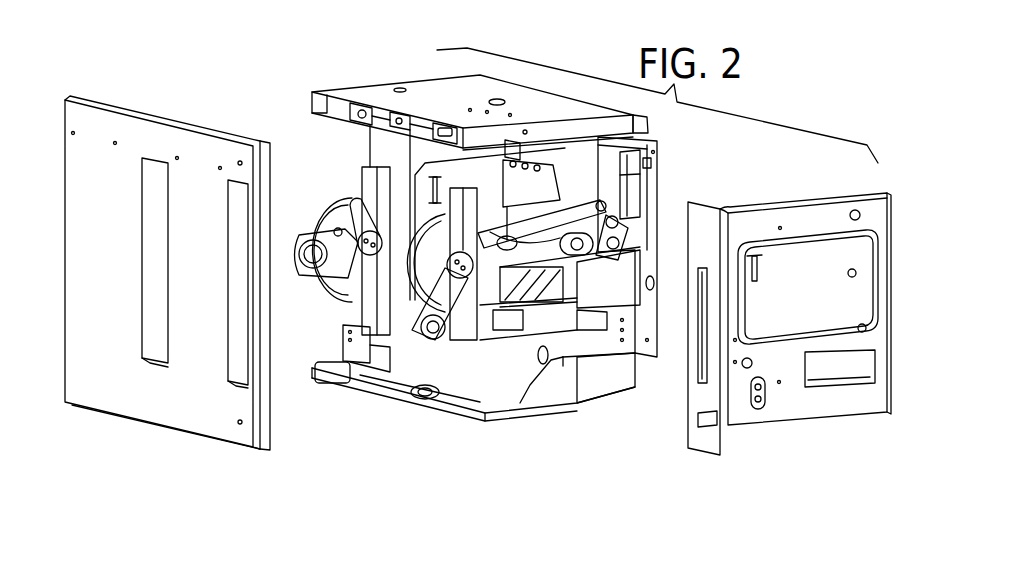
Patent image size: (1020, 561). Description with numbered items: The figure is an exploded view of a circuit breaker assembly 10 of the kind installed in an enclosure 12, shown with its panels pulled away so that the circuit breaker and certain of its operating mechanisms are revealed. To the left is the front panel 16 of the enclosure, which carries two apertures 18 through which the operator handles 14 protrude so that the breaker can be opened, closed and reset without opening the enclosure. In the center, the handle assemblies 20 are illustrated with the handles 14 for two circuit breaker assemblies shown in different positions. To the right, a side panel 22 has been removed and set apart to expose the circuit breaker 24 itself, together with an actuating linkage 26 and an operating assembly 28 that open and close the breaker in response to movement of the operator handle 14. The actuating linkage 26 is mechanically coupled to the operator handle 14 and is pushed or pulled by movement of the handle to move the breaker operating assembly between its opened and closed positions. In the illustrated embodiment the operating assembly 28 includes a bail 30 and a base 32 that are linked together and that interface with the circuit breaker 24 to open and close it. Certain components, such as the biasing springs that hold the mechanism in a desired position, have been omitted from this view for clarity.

The assembly 10 is at (362, 464).
The enclosure 12 is at (458, 90).
The operator handle 14 is at (410, 350).
The front panel 16 is at (165, 405).
The apertures 18 is at (238, 252).
The handle assembly 20 is at (448, 347).
The side panel 22 is at (805, 263).
The circuit breaker 24 is at (600, 183).
The actuating linkage 26 is at (577, 240).
The operating assembly 28 is at (615, 220).
The bail 30 is at (540, 250).
The base 32 is at (627, 182).